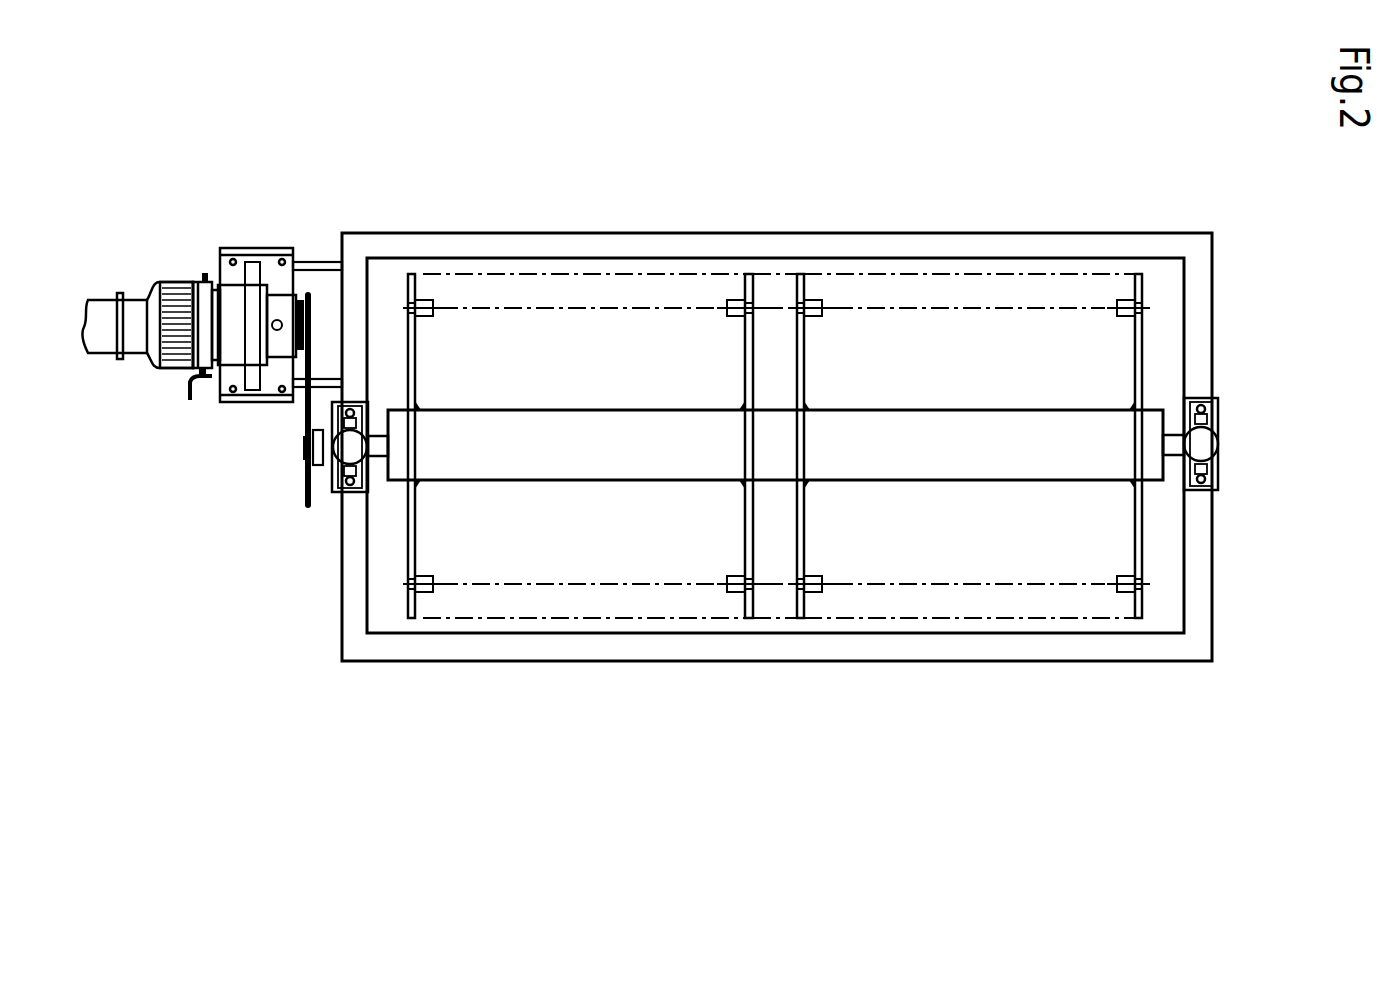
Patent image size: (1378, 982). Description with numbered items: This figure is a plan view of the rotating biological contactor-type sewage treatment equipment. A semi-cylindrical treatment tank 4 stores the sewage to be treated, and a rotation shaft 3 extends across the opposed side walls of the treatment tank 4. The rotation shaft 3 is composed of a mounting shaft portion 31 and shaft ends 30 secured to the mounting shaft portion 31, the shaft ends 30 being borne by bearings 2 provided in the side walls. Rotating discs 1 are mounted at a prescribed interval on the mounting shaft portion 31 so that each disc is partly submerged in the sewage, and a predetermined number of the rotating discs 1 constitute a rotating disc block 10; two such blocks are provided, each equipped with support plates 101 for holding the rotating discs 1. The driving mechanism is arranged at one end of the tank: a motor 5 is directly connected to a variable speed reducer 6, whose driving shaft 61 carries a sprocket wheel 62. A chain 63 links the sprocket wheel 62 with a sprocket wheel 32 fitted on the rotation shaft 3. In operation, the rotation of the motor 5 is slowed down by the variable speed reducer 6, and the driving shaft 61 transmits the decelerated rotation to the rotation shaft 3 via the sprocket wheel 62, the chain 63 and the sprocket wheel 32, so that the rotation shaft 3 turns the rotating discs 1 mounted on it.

The rotating disc 1 is at (745, 277).
The bearing 2 is at (350, 440).
The rotation shaft 3 is at (760, 367).
The treatment tank 4 is at (697, 662).
The motor 5 is at (103, 305).
The variable speed reducer 6 is at (247, 290).
The rotating disc block 10 is at (640, 262).
The shaft end 30 is at (376, 482).
The mounting shaft portion 31 is at (555, 410).
The sprocket wheel 32 is at (303, 420).
The driving shaft 61 is at (298, 292).
The sprocket wheel 62 is at (309, 290).
The chain 63 is at (305, 353).
The support plate 101 is at (407, 548).